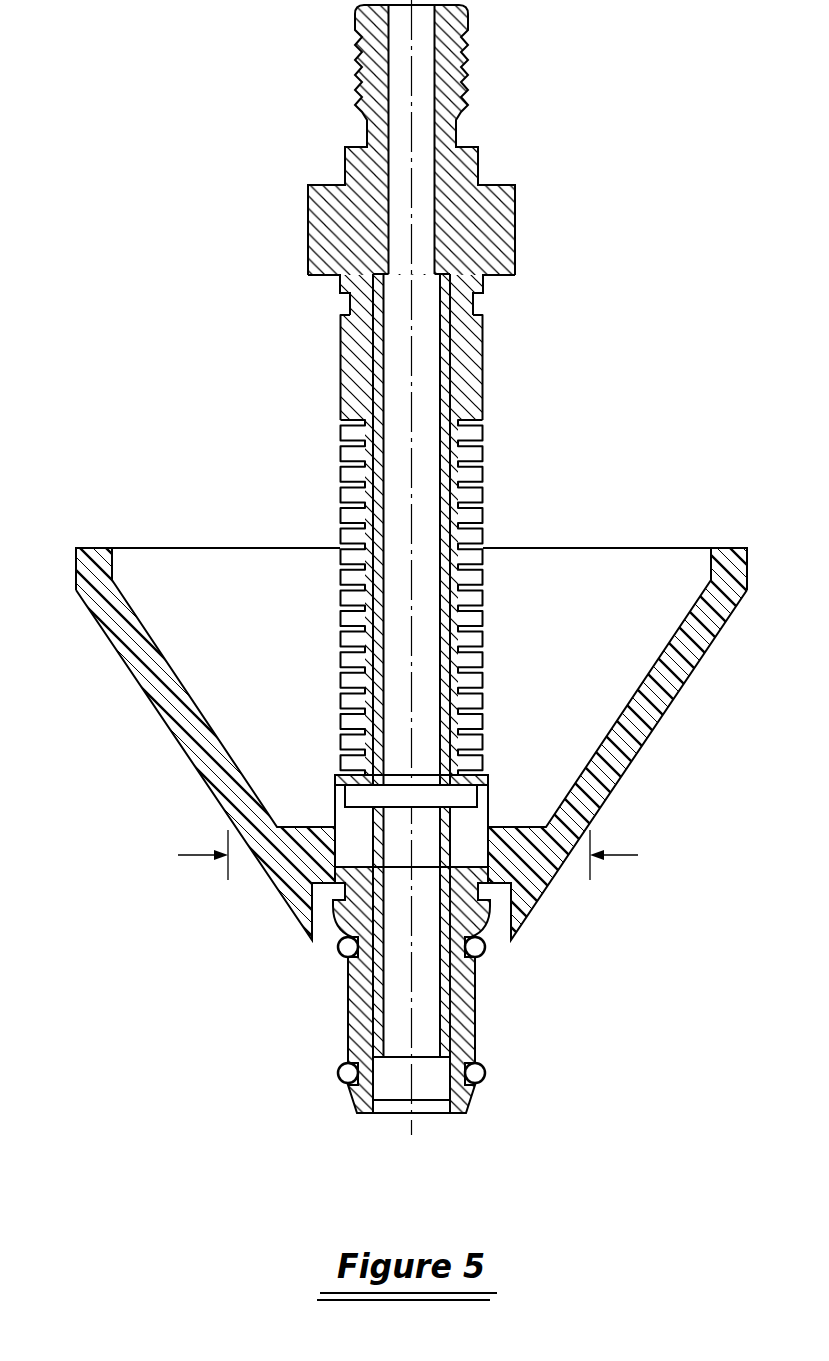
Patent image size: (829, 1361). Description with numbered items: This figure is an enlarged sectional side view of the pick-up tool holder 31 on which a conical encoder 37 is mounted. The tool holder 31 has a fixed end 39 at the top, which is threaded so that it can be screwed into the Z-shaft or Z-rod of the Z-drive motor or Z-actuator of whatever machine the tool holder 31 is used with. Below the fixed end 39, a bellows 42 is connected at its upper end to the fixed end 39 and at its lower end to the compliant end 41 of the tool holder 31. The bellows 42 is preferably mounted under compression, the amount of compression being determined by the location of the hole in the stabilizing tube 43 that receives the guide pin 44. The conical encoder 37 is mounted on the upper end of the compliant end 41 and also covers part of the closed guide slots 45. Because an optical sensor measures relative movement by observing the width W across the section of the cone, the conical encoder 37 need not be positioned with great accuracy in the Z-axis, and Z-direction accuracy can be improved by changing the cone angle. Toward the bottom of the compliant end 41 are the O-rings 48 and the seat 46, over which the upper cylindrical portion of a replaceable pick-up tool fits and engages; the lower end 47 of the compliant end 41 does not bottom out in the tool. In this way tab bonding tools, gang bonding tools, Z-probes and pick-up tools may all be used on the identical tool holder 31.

The tool holder 31 is at (170, 439).
The conical encoder 37 is at (107, 632).
The fixed end 39 is at (500, 200).
The compliant end 41 is at (460, 1038).
The bellows 42 is at (483, 517).
The stabilizing tube 43 is at (431, 440).
The guide pin 44 is at (470, 797).
The closed guide slots 45 is at (472, 842).
The seat 46 is at (480, 928).
The end cap 47 is at (465, 1105).
The O-rings 48 is at (340, 955).